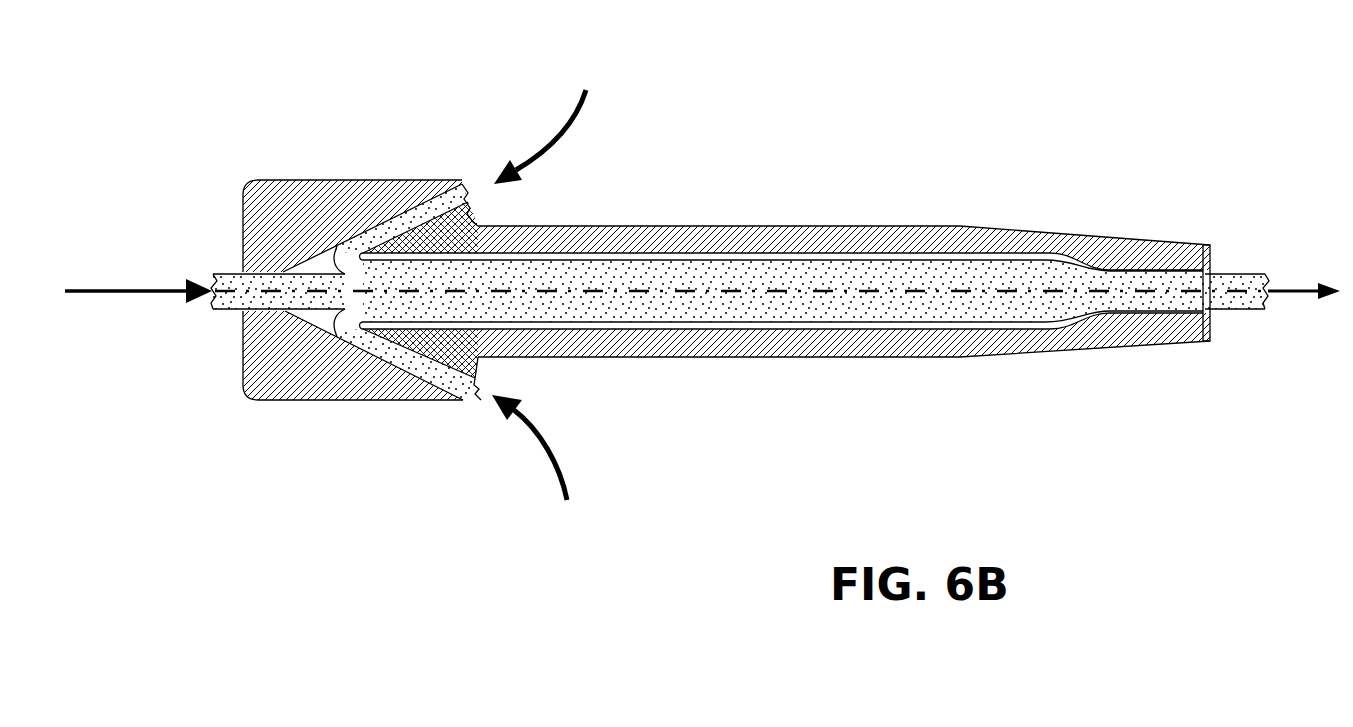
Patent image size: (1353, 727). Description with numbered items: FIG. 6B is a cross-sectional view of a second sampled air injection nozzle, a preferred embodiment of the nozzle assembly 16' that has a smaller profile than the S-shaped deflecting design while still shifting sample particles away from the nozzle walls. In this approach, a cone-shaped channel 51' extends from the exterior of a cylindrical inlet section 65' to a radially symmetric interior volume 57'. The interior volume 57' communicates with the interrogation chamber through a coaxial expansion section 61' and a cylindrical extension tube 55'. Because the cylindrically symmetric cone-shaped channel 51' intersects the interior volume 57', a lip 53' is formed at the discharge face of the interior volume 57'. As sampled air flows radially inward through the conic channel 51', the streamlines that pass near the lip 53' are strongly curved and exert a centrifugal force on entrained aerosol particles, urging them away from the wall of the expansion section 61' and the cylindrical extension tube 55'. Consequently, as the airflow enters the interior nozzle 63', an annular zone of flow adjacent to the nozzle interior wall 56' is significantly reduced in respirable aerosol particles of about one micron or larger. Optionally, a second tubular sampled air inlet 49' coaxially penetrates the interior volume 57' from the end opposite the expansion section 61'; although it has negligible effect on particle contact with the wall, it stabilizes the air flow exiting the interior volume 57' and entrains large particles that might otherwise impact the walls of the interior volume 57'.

The nozzle assembly 16' is at (777, 257).
The second tubular sampled air inlet 49' is at (205, 244).
The cone-shaped channel 51' is at (460, 181).
The lip 53' is at (785, 198).
The cylindrical extension tube 55' is at (785, 374).
The nozzle interior wall 56' is at (1080, 212).
The interior volume 57' is at (296, 367).
The coaxial expansion section 61' is at (450, 404).
The interior nozzle 63' is at (1223, 339).
The cylindrical inlet section 65' is at (351, 241).